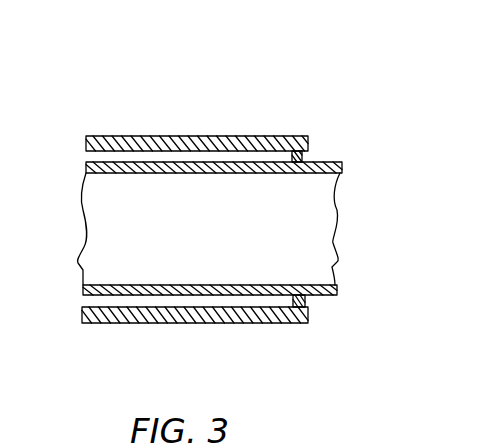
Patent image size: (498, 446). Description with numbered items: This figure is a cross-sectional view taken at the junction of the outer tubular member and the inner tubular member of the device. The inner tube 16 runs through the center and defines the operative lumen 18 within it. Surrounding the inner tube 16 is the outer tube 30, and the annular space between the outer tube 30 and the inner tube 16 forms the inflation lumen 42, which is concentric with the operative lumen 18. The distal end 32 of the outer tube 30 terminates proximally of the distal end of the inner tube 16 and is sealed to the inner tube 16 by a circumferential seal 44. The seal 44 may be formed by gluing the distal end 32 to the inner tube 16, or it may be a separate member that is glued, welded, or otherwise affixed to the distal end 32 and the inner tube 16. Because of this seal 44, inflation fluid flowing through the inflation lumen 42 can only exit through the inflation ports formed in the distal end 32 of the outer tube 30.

The inner tube 16 is at (342, 172).
The operative lumen 18 is at (310, 233).
The outer tube 30 is at (185, 323).
The distal end of outer tube 32 is at (303, 136).
The inflation lumen 42 is at (247, 300).
The circumferential seal 44 is at (305, 299).